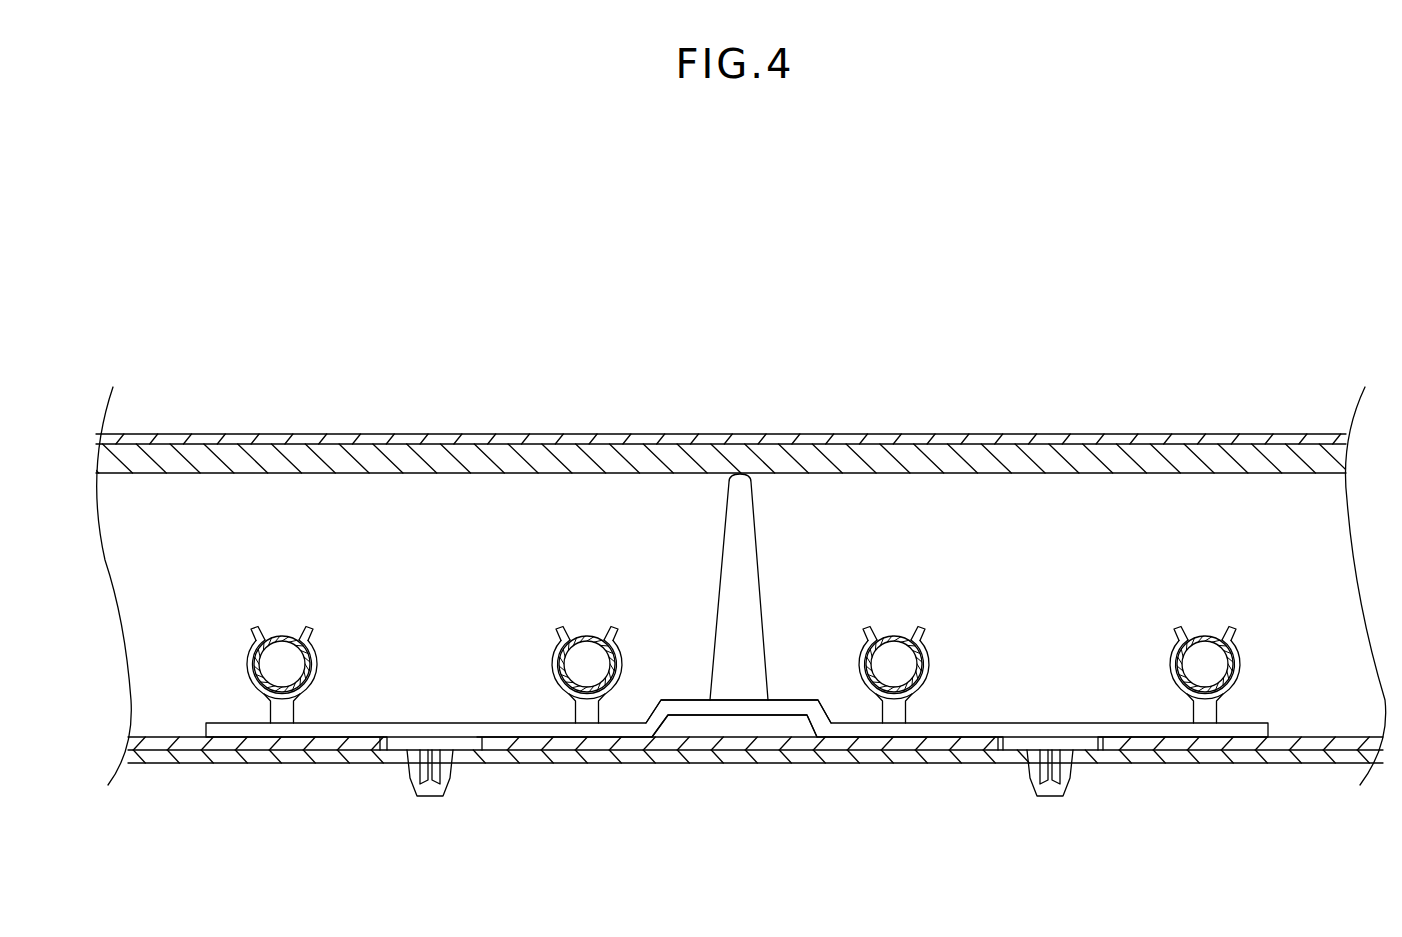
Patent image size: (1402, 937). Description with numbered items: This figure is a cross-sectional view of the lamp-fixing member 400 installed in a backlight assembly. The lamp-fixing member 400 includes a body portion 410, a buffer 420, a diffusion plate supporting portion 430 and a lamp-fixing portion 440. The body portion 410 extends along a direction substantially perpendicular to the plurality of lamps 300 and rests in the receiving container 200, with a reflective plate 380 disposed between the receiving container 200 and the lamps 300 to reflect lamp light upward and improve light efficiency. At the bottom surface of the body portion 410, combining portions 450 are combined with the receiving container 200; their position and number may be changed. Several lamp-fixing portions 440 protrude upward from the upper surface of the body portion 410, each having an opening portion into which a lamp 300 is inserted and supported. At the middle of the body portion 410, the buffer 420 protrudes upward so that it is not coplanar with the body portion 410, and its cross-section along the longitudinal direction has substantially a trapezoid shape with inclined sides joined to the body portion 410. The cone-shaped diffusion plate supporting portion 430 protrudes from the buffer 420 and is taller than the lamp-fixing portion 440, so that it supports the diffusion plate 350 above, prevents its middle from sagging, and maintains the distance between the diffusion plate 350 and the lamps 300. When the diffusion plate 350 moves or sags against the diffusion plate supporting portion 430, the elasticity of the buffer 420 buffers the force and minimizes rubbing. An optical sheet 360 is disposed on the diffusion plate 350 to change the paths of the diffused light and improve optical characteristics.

The receiving container 200 is at (813, 740).
The lamp 300 is at (1172, 672).
The diffusion plate 350 is at (836, 455).
The optical sheet 360 is at (910, 440).
The reflective plate 380 is at (880, 758).
The lamp-fixing member 400 is at (770, 728).
The body portion 410 is at (948, 745).
The buffer 420 is at (720, 708).
The diffusion plate supporting portion 430 is at (730, 523).
The lamp-fixing portion 440 is at (1242, 671).
The combining portion 450 is at (1032, 780).